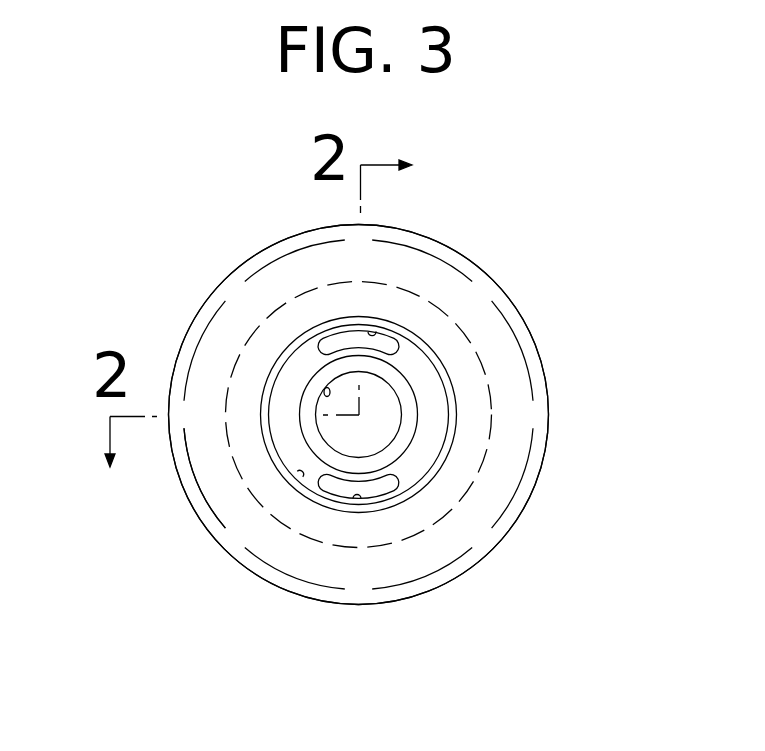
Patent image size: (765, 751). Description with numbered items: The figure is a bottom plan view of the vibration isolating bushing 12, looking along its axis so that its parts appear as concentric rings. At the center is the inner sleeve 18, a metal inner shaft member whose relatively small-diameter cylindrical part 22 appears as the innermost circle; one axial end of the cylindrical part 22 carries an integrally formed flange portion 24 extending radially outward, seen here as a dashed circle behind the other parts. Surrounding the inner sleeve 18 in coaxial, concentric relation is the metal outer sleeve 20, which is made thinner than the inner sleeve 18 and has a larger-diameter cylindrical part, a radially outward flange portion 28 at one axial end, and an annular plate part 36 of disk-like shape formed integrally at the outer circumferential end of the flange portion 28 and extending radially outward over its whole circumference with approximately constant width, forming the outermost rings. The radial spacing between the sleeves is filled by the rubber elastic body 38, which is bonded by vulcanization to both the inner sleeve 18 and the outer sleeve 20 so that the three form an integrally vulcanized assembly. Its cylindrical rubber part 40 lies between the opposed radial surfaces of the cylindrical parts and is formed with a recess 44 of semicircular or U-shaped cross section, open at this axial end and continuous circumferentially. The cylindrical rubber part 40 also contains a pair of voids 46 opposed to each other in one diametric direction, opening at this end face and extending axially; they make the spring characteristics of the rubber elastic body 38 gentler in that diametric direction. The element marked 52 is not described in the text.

The vibration isolating bushing 12 is at (234, 239).
The outer sleeve 20 is at (548, 538).
The annular plate part 36 is at (488, 282).
The flange portion 28 is at (233, 507).
The flange portion 24 is at (247, 367).
The cylindrical rubber part 40 is at (420, 453).
The rubber elastic body 38 is at (421, 497).
The inner sleeve 18 is at (427, 382).
The cylindrical part 22 is at (412, 433).
The voids 46 is at (373, 334).
The recess 44 is at (302, 478).
The pin 52 is at (327, 388).